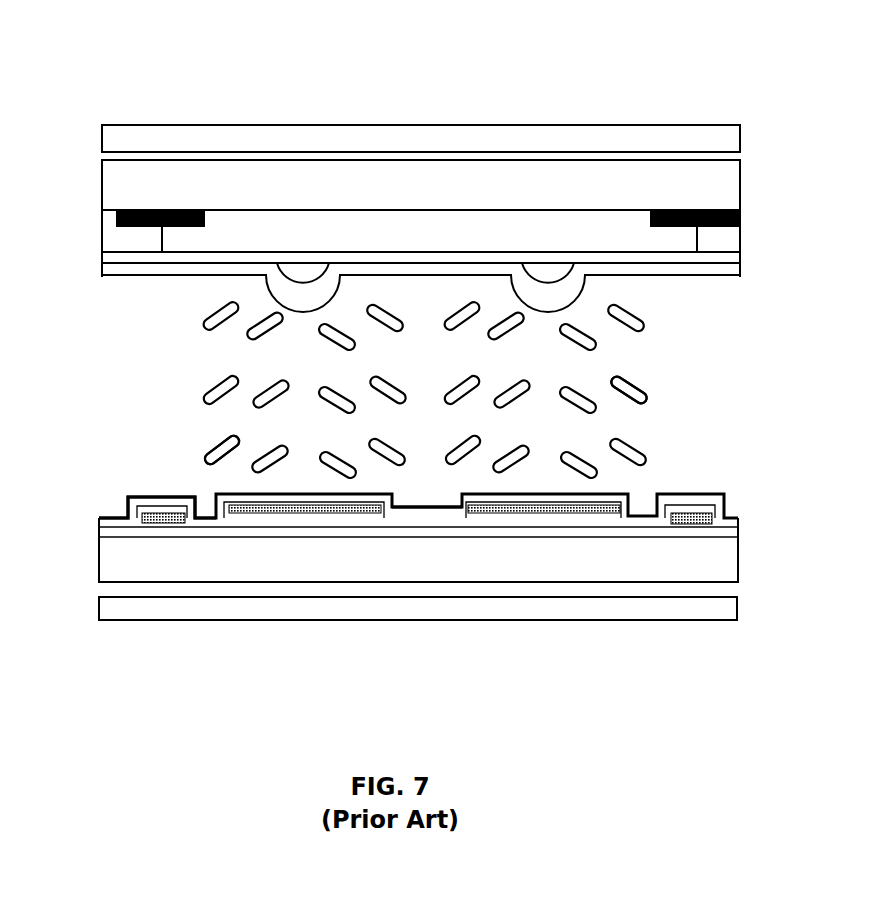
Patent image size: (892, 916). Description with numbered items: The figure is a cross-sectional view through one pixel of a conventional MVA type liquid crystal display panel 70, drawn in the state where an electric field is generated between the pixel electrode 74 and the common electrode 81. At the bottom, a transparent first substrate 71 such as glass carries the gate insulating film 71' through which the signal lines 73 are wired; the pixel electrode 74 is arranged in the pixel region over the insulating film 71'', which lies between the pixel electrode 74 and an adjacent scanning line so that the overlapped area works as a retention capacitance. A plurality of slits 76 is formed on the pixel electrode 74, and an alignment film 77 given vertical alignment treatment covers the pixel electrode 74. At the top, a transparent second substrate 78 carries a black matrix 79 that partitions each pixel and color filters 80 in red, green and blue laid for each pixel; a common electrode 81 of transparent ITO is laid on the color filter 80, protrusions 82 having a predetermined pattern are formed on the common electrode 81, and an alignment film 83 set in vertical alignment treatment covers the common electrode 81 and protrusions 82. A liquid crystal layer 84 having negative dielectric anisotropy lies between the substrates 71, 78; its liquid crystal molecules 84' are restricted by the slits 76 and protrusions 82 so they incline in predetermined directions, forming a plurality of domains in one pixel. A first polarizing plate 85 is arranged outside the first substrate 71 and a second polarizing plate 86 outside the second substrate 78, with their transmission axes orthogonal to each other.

The MVA type liquid crystal display panel 70 is at (126, 52).
The first substrate 71 is at (447, 553).
The gate insulating film 71' is at (450, 529).
The insulating film 71'' is at (453, 579).
The signal line 73 is at (167, 527).
The pixel electrode 74 is at (267, 514).
The slit 76 is at (427, 490).
The alignment film 77 is at (128, 498).
The second substrate 78 is at (627, 186).
The black matrix 79 is at (128, 210).
The color filter 80 is at (270, 232).
The common electrode 81 is at (129, 264).
The protrusion 82 is at (303, 278).
The alignment film 83 is at (730, 273).
The liquid crystal layer 84 is at (351, 390).
The liquid crystal molecule 84' is at (429, 420).
The first polarizing plate 85 is at (353, 610).
The second polarizing plate 86 is at (386, 136).